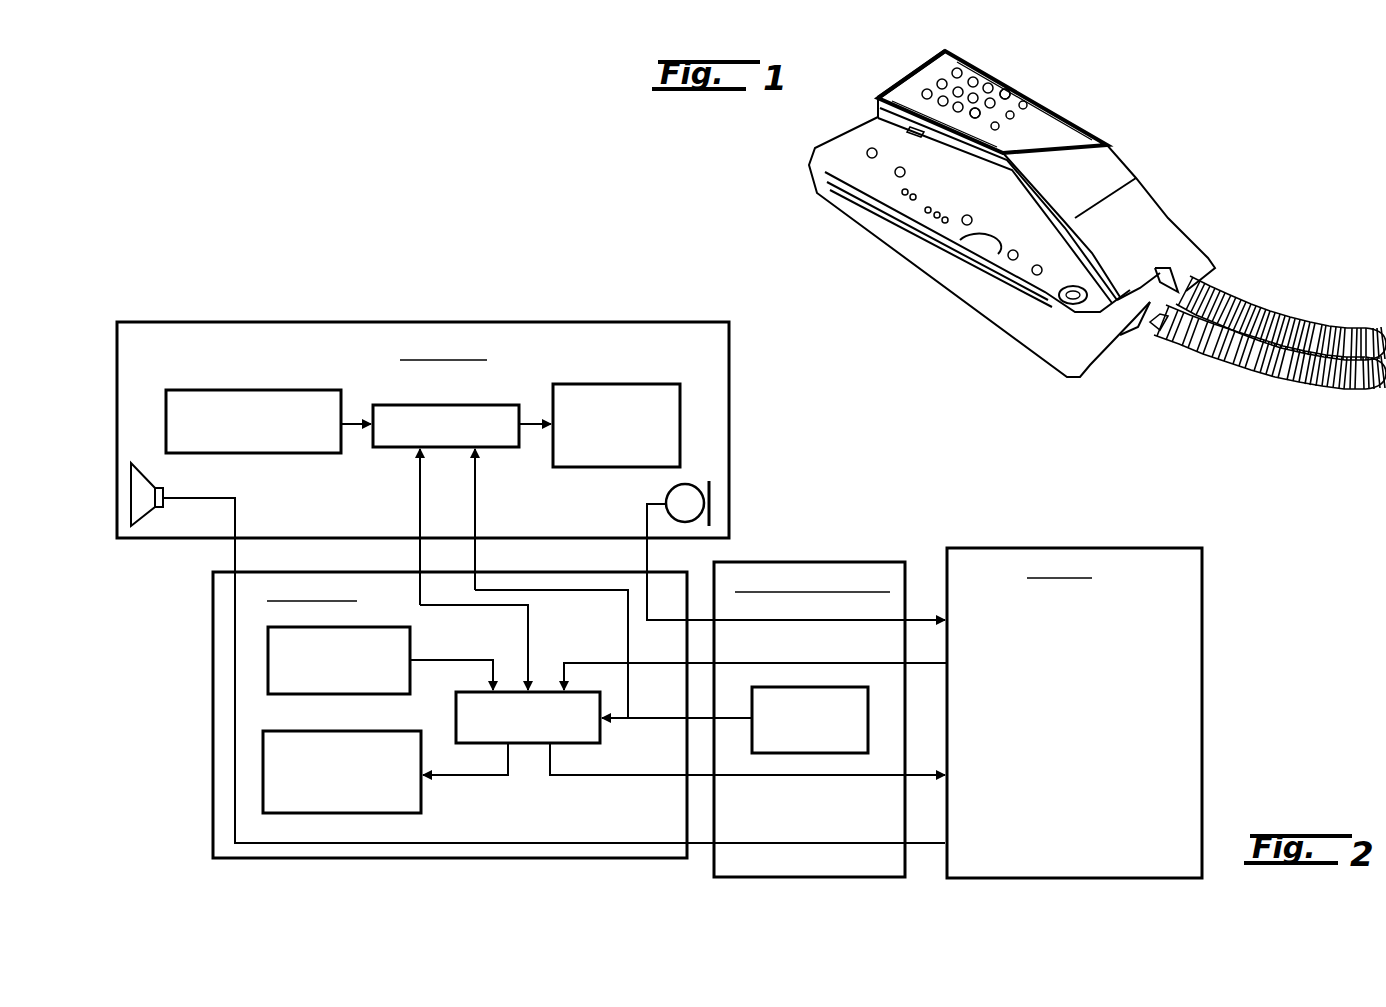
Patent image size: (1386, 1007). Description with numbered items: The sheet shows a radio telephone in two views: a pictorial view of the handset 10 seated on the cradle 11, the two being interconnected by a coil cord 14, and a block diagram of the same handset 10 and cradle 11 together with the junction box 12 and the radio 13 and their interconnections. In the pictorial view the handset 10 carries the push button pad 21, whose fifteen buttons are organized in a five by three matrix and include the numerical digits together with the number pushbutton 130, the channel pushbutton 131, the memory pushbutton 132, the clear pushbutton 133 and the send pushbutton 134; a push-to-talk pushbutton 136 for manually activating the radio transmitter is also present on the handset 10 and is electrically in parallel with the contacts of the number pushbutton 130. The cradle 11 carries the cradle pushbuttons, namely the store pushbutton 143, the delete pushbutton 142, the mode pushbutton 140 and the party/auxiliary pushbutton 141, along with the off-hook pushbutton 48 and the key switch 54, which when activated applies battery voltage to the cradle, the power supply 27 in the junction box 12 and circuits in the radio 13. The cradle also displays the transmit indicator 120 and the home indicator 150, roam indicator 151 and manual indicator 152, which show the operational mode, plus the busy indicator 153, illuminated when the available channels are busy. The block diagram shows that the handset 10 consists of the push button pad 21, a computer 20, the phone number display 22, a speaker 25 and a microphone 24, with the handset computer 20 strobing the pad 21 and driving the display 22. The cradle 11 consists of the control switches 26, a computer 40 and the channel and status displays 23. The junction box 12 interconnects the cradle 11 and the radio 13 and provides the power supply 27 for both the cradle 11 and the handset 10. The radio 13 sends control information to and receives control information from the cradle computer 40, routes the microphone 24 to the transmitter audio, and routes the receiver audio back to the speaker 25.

In FIG. 1, the handset 10 is at (1132, 197).
In FIG. 2, the handset 10 is at (421, 321).
In FIG. 1, the cradle 11 is at (1085, 362).
In FIG. 2, the cradle 11 is at (350, 572).
In FIG. 2, the junction box 12 is at (838, 562).
In FIG. 2, the radio 13 is at (1085, 548).
In FIG. 1, the coil cord 14 is at (1226, 312).
In FIG. 2, the computer 20 is at (464, 405).
In FIG. 1, the push button pad 21 is at (996, 76).
In FIG. 2, the push button pad 21 is at (287, 390).
In FIG. 1, the phone number display 22 is at (932, 72).
In FIG. 2, the phone number display 22 is at (617, 384).
In FIG. 2, the channel and status displays 23 is at (365, 731).
In FIG. 2, the microphone 24 is at (667, 497).
In FIG. 2, the speaker 25 is at (143, 482).
In FIG. 2, the control switches 26 is at (410, 648).
In FIG. 2, the power supply 27 is at (830, 753).
In FIG. 2, the computer 40 is at (592, 737).
In FIG. 1, the off-hook pushbutton 48 is at (1011, 260).
In FIG. 1, the key switch 54 is at (1065, 304).
In FIG. 1, the transmit indicator 120 is at (928, 210).
In FIG. 1, the number pushbutton 130 is at (978, 112).
In FIG. 1, the channel pushbutton 131 is at (1008, 92).
In FIG. 1, the memory pushbutton 132 is at (1000, 126).
In FIG. 1, the clear pushbutton 133 is at (1015, 116).
In FIG. 1, the send pushbutton 134 is at (1028, 106).
In FIG. 1, the push-to-talk pushbutton 136 is at (877, 113).
In FIG. 1, the mode pushbutton 140 is at (957, 243).
In FIG. 1, the party/auxiliary pushbutton 141 is at (1035, 275).
In FIG. 1, the delete pushbutton 142 is at (872, 153).
In FIG. 1, the store pushbutton 143 is at (900, 172).
In FIG. 1, the home indicator 150 is at (937, 215).
In FIG. 1, the roam indicator 151 is at (945, 220).
In FIG. 1, the manual indicator 152 is at (962, 225).
In FIG. 1, the busy indicator 153 is at (905, 192).